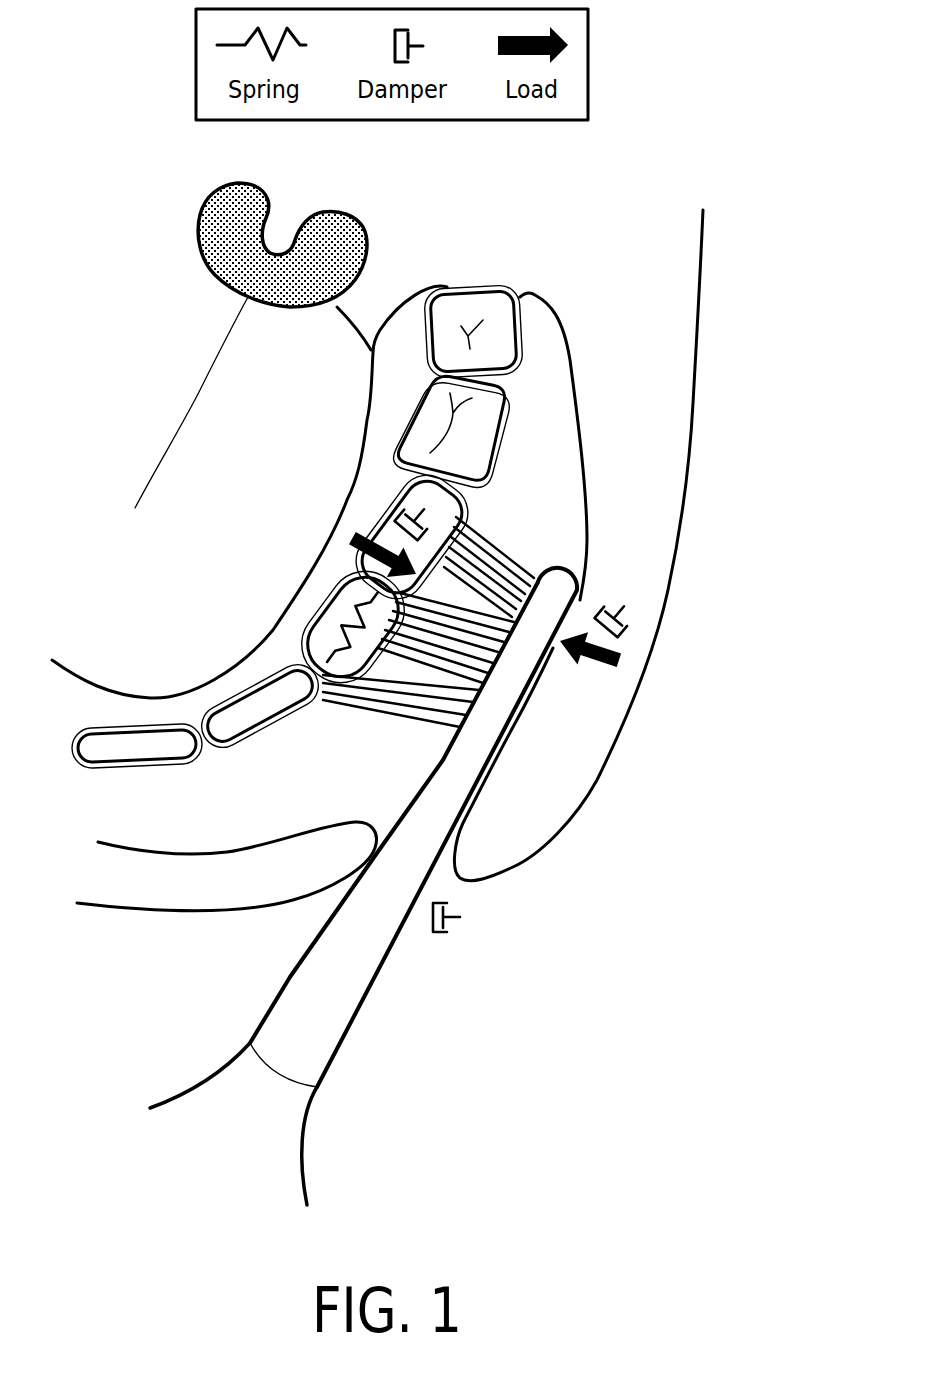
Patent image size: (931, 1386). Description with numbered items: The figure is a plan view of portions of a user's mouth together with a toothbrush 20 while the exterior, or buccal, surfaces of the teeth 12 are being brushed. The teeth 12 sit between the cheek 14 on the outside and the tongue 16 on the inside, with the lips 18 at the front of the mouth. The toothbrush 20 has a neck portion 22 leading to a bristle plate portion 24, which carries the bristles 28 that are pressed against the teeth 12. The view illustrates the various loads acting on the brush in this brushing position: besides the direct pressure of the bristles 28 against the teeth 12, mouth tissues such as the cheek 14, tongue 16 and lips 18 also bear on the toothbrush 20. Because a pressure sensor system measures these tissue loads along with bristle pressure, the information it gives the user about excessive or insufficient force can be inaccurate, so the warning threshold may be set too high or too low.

The teeth 12 is at (490, 332).
The cheek 14 is at (638, 467).
The tongue 16 is at (227, 405).
The lips 18 is at (518, 827).
The toothbrush 20 is at (478, 835).
The neck portion 22 is at (403, 867).
The bristle plate portion 24 is at (517, 663).
The bristles 28 is at (483, 560).